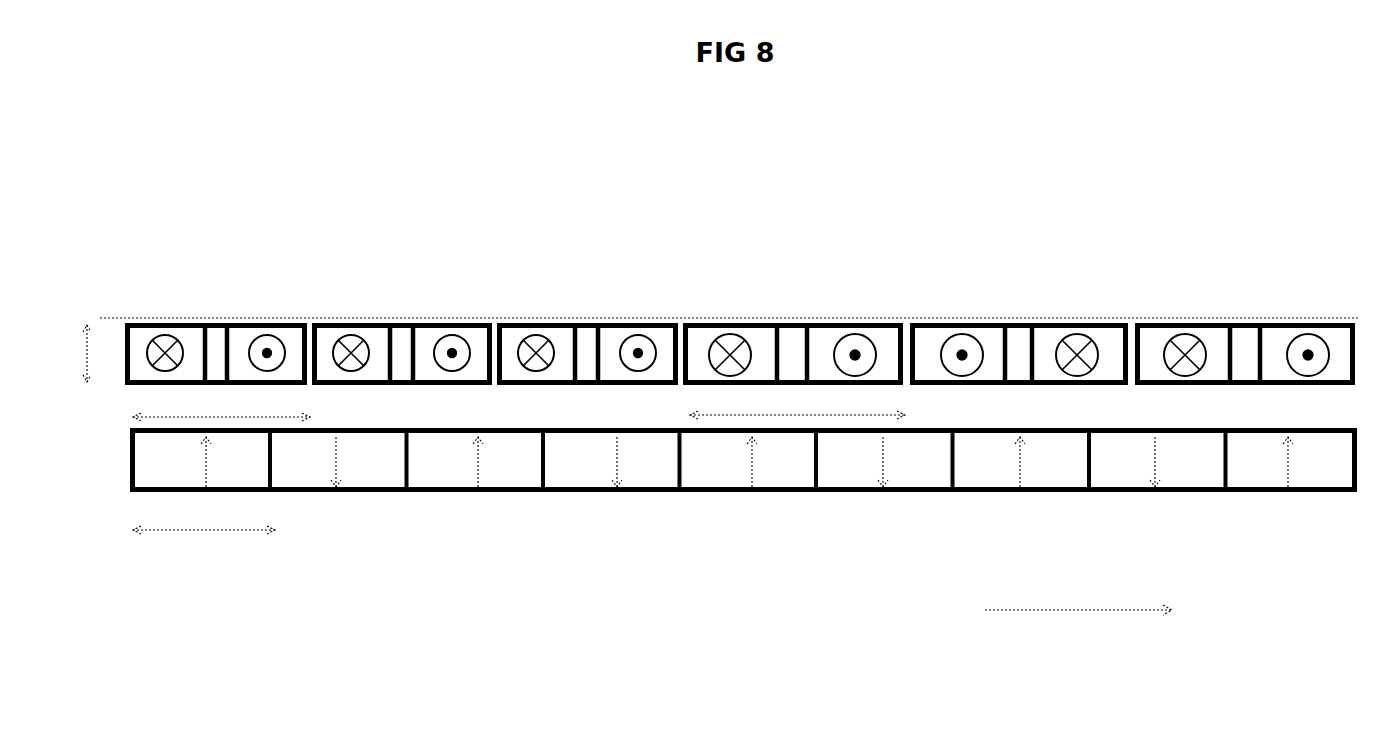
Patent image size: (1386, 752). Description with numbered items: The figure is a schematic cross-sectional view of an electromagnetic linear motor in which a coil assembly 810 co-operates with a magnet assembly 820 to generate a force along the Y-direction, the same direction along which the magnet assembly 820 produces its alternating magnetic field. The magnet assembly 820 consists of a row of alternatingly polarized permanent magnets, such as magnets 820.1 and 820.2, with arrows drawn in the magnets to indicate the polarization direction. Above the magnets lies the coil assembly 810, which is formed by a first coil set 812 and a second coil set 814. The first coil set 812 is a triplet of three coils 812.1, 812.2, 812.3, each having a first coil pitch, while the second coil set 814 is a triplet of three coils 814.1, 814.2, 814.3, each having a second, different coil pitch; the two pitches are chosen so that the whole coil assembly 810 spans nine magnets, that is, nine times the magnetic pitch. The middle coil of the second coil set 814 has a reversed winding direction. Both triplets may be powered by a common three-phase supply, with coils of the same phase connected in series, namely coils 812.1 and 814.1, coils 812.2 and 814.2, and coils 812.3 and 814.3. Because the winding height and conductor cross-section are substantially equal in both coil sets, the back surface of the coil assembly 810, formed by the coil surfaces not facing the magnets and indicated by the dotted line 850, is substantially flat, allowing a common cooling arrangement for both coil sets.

The coil assembly 810 is at (148, 158).
The first coil set 812 is at (130, 297).
The coil of first coil set 812.1 is at (187, 338).
The coil of first coil set 812.2 is at (380, 332).
The coil of first coil set 812.3 is at (563, 347).
The second coil set 814 is at (1347, 293).
The coil of second coil set 814.1 is at (788, 340).
The coil of second coil set 814.2 is at (990, 343).
The coil of second coil set 814.3 is at (1217, 343).
The magnet assembly 820 is at (190, 578).
The permanent magnet 820.1 is at (373, 475).
The permanent magnet 820.2 is at (510, 475).
The dotted line indicating back surface of the coil assembly 850 is at (113, 318).